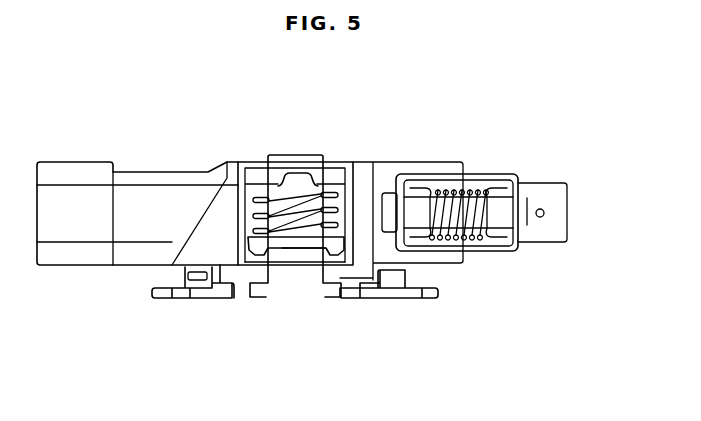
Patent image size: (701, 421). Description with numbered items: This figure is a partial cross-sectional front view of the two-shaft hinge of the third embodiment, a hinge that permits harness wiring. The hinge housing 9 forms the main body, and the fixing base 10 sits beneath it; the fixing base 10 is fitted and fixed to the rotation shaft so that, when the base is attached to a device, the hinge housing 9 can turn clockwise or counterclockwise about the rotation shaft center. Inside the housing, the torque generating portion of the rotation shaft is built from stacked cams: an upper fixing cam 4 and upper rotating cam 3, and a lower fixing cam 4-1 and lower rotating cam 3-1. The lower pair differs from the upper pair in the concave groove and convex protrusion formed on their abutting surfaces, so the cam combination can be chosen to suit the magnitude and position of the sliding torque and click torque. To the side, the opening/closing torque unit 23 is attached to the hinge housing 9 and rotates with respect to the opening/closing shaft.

The rotating cam 3 is at (257, 172).
The rotating cam 3-1 is at (280, 257).
The fixing cam 4 is at (302, 183).
The fixing cam 4-1 is at (307, 243).
The hinge housing 9 is at (72, 207).
The fixing base 10 is at (375, 307).
The opening/closing torque unit 23 is at (487, 263).